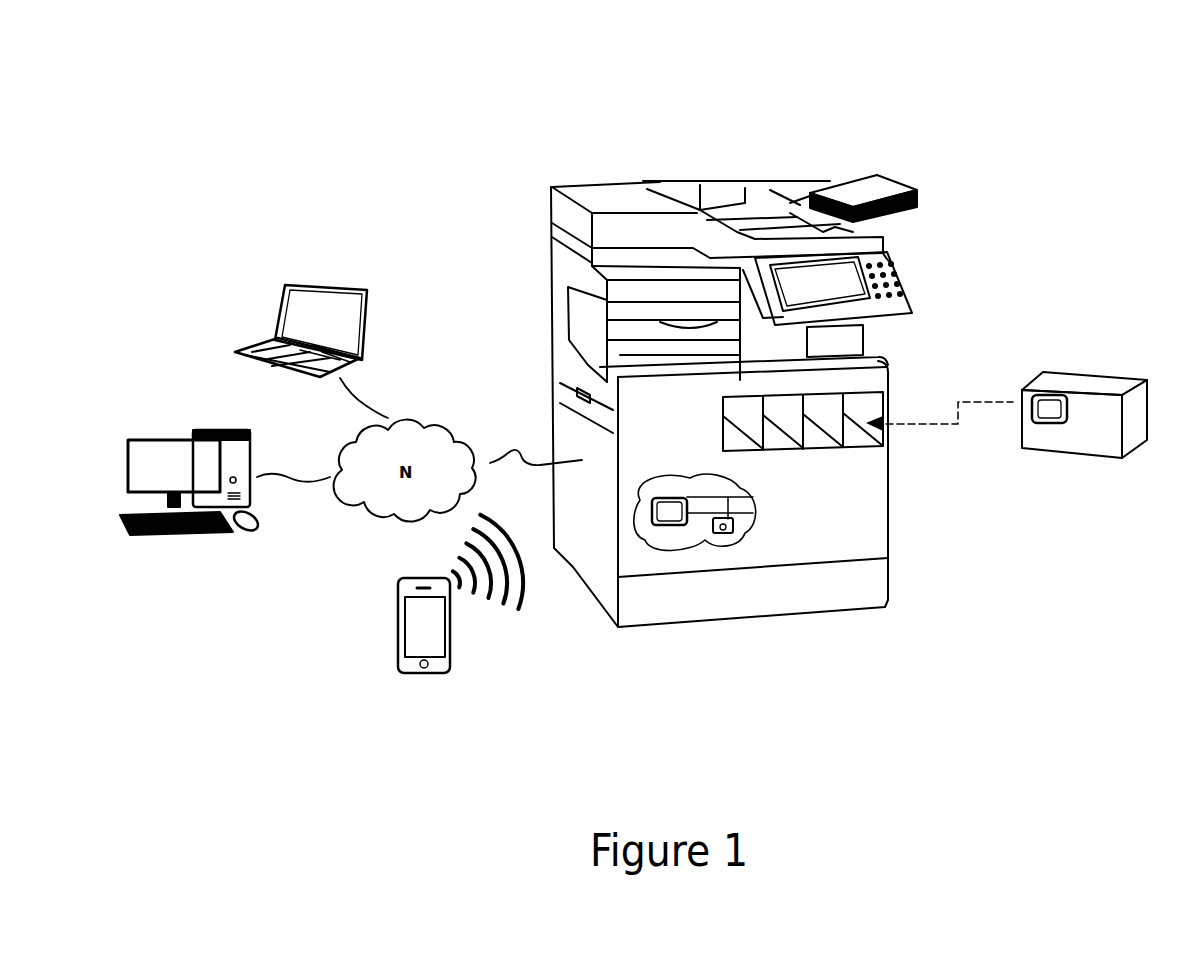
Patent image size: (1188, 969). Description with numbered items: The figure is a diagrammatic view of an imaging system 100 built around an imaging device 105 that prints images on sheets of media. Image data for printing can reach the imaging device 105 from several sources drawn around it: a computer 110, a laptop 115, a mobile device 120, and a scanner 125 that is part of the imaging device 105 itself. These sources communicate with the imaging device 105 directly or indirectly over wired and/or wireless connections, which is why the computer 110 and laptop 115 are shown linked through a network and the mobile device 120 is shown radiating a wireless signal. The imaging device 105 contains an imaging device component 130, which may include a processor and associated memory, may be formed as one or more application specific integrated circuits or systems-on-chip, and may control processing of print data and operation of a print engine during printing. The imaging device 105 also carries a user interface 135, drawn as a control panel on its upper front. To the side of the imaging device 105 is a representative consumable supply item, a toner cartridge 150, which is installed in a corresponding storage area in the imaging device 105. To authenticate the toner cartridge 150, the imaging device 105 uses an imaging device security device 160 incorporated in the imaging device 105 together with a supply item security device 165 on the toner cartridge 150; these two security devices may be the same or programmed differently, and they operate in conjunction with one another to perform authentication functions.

The imaging system 100 is at (1023, 50).
The imaging device 105 is at (576, 163).
The computer 110 is at (207, 425).
The laptop 115 is at (317, 283).
The mobile device 120 is at (398, 623).
The scanner 125 is at (548, 214).
The imaging device component 130 is at (675, 494).
The user interface 135 is at (893, 270).
The toner cartridge 150 is at (1135, 380).
The imaging device security device 160 is at (731, 533).
The supply item security device 165 is at (1064, 398).